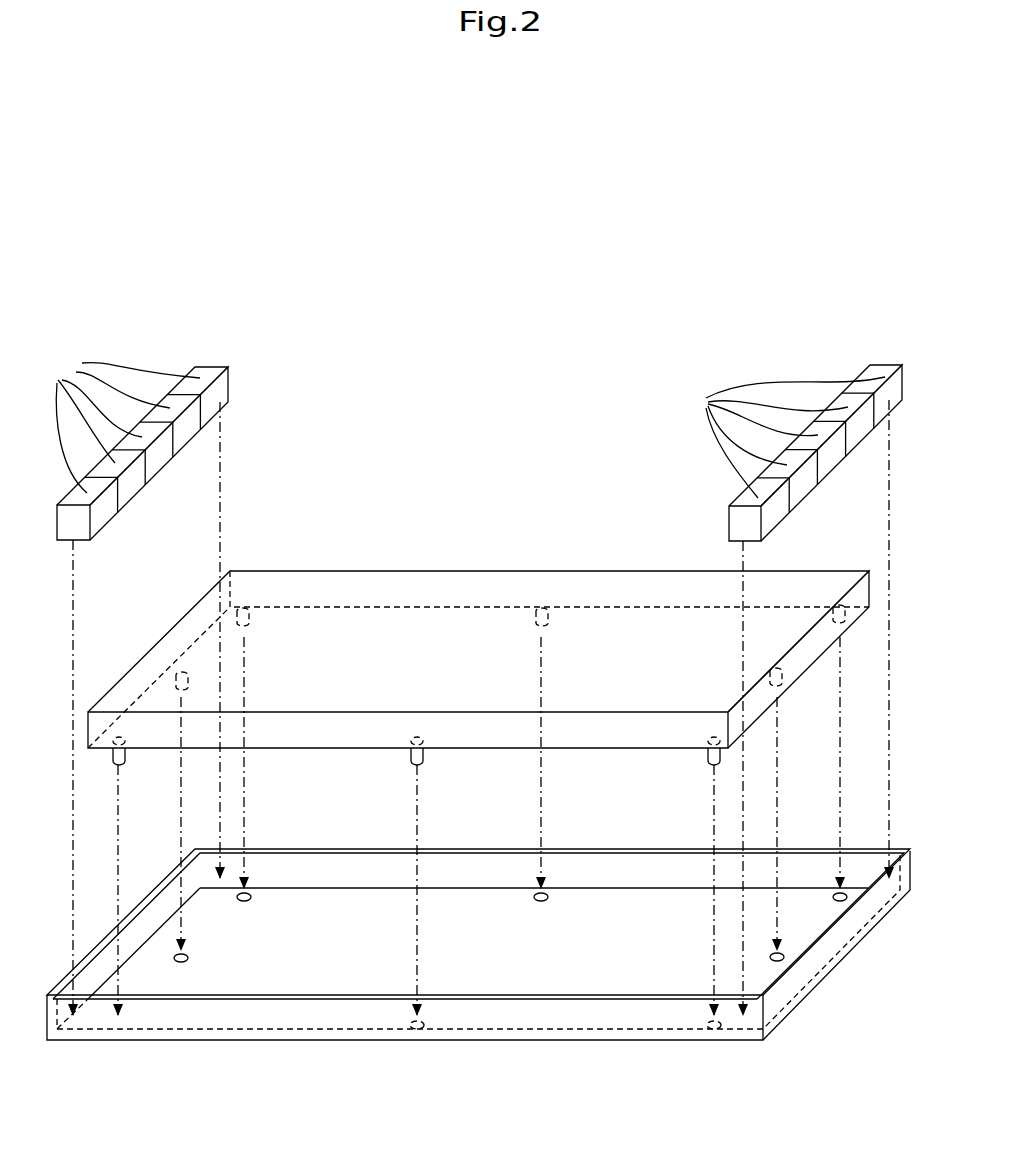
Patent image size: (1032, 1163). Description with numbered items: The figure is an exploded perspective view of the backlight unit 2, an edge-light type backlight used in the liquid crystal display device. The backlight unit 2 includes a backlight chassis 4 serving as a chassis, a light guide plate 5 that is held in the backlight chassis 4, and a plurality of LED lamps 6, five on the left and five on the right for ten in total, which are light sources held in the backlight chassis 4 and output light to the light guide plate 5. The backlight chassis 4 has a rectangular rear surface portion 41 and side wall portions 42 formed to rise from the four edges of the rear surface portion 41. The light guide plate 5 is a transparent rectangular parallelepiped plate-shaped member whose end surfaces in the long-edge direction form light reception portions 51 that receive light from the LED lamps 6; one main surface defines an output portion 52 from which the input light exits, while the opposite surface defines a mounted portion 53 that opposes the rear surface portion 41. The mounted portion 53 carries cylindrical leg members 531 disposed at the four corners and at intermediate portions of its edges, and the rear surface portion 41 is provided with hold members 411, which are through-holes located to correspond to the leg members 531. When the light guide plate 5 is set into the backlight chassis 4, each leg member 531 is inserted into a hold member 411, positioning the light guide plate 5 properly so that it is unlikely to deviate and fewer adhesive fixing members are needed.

The backlight unit 2 is at (604, 378).
The backlight chassis 4 is at (300, 1030).
The rear surface portion 41 is at (578, 973).
The hold members 411 is at (540, 892).
The side wall portions 42 is at (157, 908).
The light guide plate 5 is at (425, 592).
The light reception portions 51 is at (168, 638).
The output portion 52 is at (305, 592).
The mounted portion 53 is at (559, 756).
The leg members 531 is at (839, 615).
The LED lamps 6 is at (479, 446).